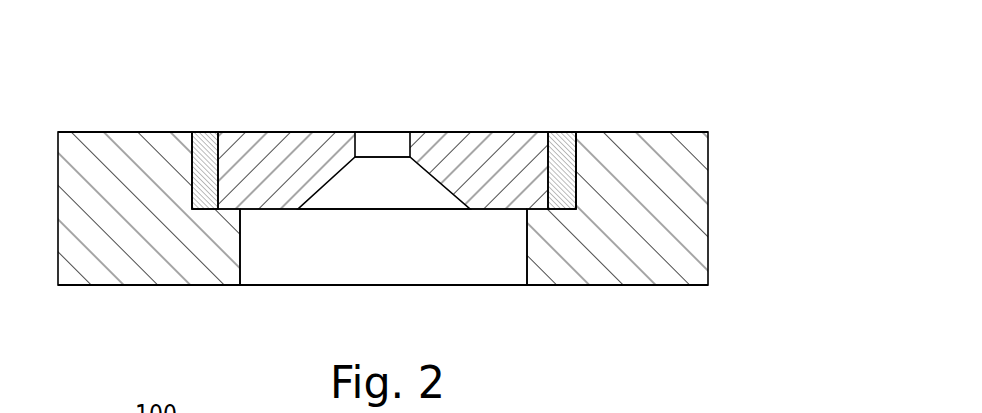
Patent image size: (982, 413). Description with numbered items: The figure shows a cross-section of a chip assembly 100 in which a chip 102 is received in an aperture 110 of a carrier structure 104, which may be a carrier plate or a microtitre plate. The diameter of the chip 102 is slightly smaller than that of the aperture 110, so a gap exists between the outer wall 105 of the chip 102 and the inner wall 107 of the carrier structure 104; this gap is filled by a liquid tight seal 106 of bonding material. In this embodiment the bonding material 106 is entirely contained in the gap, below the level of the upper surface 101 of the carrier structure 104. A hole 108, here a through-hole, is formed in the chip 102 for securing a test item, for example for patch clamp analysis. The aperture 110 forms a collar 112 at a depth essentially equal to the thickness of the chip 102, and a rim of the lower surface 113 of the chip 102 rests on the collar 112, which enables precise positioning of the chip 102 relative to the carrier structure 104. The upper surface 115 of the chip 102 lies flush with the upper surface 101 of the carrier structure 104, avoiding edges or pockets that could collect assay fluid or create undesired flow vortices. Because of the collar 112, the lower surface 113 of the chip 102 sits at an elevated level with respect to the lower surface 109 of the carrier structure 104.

The chip assembly 100 is at (120, 104).
The upper surface of the carrier structure 101 is at (142, 131).
The chip 102 is at (510, 143).
The carrier structure 104 is at (677, 182).
The outer wall of the chip 105 is at (219, 153).
The liquid tight seal 106 is at (205, 140).
The inner wall of the carrier structure 107 is at (192, 192).
The hole 108 is at (383, 143).
The lower surface of the carrier structure 109 is at (675, 285).
The aperture 110 is at (475, 268).
The collar 112 is at (240, 262).
The lower surface of the chip 113 is at (268, 209).
The upper surface of the chip 115 is at (463, 143).